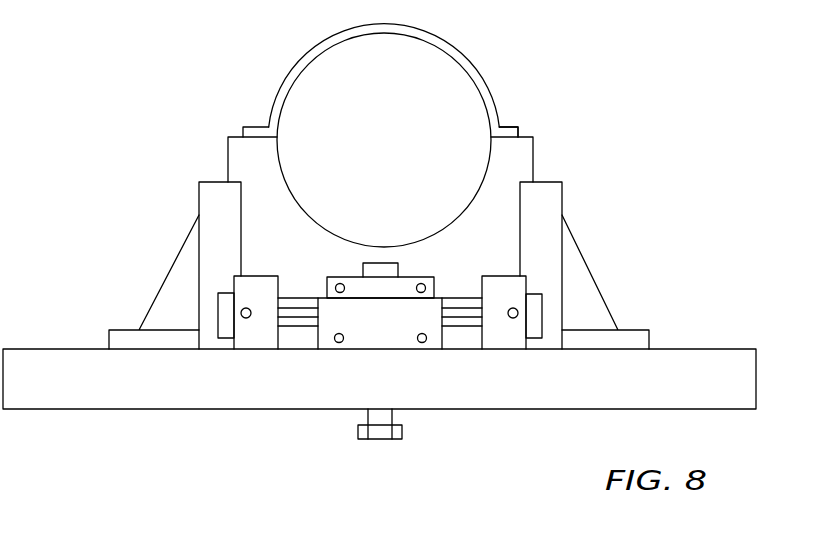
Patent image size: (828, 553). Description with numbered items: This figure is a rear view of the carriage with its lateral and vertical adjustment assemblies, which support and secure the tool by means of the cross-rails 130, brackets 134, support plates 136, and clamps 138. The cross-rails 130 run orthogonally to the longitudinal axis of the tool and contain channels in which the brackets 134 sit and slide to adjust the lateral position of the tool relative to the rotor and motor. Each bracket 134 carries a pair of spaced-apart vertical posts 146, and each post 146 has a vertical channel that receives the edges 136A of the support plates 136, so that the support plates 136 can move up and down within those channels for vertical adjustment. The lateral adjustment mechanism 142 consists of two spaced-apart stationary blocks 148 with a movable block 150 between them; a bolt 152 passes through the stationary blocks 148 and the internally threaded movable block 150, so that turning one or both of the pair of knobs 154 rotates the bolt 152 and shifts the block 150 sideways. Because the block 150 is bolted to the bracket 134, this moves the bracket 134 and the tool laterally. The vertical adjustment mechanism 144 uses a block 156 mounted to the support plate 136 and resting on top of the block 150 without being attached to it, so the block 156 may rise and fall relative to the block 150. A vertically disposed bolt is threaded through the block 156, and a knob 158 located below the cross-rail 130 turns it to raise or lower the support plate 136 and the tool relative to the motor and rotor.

The cross-rails 130 is at (693, 349).
The brackets 134 is at (182, 218).
The support plates 136 is at (290, 225).
The edges of the support plates 136A is at (522, 137).
The clamps 138 is at (284, 82).
The lateral adjustment mechanism 142 is at (538, 283).
The vertical adjustment mechanism 144 is at (427, 263).
The vertical posts 146 is at (218, 182).
The stationary blocks 148 is at (257, 330).
The movable block 150 is at (355, 330).
The bolt 152 is at (467, 320).
The knobs 154 is at (218, 315).
The block 156 is at (352, 276).
The knob 158 is at (380, 440).